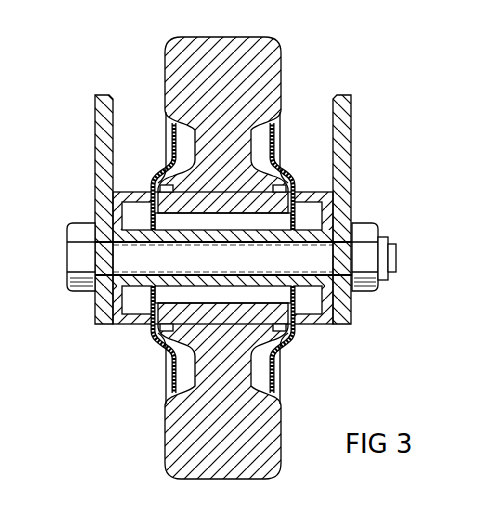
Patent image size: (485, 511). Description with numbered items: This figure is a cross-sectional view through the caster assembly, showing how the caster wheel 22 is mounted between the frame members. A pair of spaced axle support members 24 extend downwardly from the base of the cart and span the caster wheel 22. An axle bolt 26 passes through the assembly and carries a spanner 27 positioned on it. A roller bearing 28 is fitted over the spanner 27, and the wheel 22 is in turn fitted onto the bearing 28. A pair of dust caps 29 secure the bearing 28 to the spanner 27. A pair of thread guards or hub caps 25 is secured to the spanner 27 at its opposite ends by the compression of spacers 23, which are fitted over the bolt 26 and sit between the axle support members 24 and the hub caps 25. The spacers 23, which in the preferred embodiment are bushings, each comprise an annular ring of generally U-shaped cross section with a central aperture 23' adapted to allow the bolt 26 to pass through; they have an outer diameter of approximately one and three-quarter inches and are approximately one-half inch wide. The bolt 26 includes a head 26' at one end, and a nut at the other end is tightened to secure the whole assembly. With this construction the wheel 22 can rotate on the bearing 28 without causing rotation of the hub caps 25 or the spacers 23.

The caster wheel 22 is at (164, 447).
The spacers 23 is at (222, 231).
The central aperture 23' is at (260, 248).
The axle support members 24 is at (96, 119).
The hub caps 25 is at (160, 160).
The axle bolt 26 is at (246, 246).
The head 26' is at (56, 257).
The spanner 27 is at (166, 350).
The roller bearing 28 is at (176, 219).
The dust caps 29 is at (152, 183).